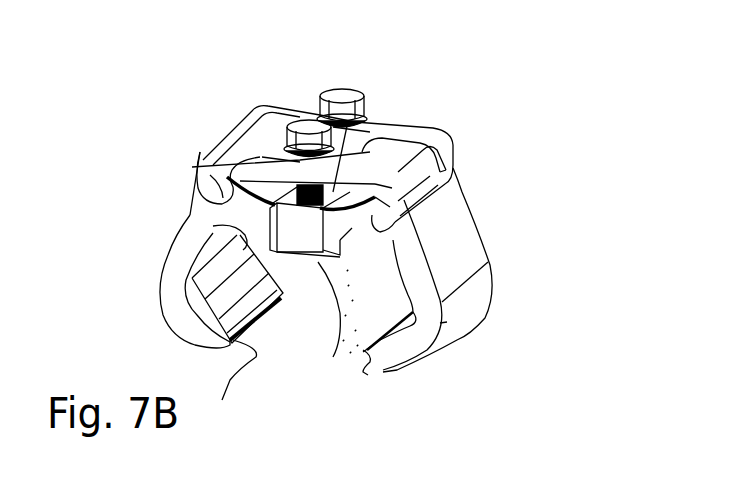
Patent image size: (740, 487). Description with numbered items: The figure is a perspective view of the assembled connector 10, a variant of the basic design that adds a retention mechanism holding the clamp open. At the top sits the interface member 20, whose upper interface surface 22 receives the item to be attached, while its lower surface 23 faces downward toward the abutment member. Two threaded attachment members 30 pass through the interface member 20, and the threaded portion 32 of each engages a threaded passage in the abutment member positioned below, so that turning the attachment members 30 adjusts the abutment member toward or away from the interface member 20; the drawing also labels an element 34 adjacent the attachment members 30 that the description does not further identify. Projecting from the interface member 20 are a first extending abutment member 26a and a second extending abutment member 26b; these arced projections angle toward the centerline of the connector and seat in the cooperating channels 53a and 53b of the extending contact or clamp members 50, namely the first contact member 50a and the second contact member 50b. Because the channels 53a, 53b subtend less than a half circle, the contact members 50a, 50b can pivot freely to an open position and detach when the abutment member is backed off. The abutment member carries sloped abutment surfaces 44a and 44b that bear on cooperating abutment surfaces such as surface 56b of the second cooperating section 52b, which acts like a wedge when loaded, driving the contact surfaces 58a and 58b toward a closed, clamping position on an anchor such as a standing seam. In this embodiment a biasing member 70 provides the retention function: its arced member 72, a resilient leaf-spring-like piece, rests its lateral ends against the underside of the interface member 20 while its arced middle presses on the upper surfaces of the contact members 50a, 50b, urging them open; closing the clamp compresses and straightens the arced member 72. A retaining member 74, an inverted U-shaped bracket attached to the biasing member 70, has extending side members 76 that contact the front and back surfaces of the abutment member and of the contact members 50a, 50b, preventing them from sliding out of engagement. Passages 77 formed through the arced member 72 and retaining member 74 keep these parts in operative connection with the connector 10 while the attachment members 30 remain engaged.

The connector 10 is at (478, 48).
The interface member 20 is at (462, 128).
The interface surface 22 is at (262, 102).
The lower surface 23 is at (197, 160).
The first extending abutment member 26a is at (197, 175).
The second extending abutment member 26b is at (433, 200).
The threaded attachment member 30 is at (290, 103).
The threaded portion 32 is at (339, 96).
The washer 34 is at (290, 183).
The sloped abutment surface 44a is at (220, 244).
The sloped abutment surface 44b is at (395, 272).
The extending contact or clamp member 50 is at (400, 316).
The first contact member 50a is at (160, 273).
The second contact member 50b is at (447, 322).
The second cooperating section 52b is at (437, 168).
The channel 53a is at (222, 155).
The channel 53b is at (417, 233).
The cooperating abutment surface 56b is at (453, 152).
The contact surface 58a is at (233, 391).
The contact surface 58b is at (368, 375).
The biasing member 70 is at (333, 330).
The arced member 72 is at (425, 138).
The retaining member 74 is at (262, 223).
The extending side member 76 is at (283, 145).
The passage 77 is at (297, 248).